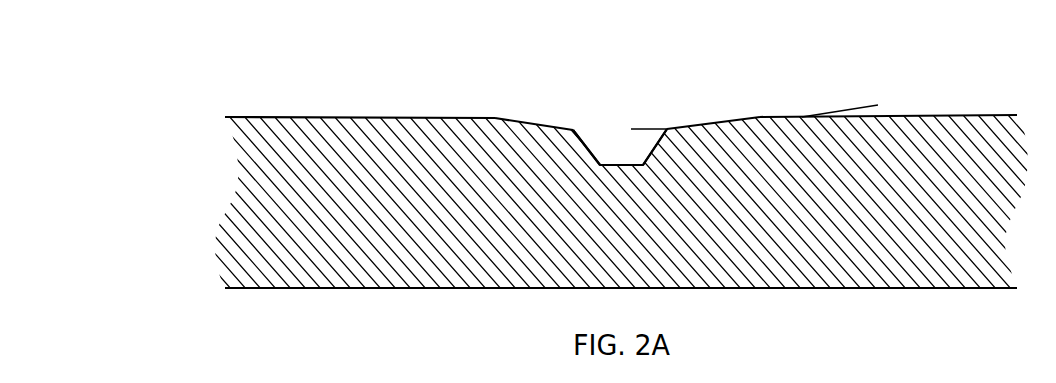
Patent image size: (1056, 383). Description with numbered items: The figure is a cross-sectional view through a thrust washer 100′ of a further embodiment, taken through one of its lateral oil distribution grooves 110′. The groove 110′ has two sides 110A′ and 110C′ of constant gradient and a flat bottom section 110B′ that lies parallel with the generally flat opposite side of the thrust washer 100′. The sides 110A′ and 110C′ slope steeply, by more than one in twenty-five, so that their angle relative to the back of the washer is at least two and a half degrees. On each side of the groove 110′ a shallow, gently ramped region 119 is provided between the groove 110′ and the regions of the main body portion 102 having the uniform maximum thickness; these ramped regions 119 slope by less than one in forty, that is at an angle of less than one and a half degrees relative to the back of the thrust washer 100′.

The thrust washer 100′ is at (212, 71).
The main body portion 102 is at (380, 117).
The ramped region 119 is at (495, 118).
The lateral oil distribution groove 110′ is at (617, 92).
The side of oil distribution groove 110A′ is at (573, 130).
The flat bottom section 110B′ is at (603, 163).
The side of oil distribution groove 110C′ is at (667, 129).